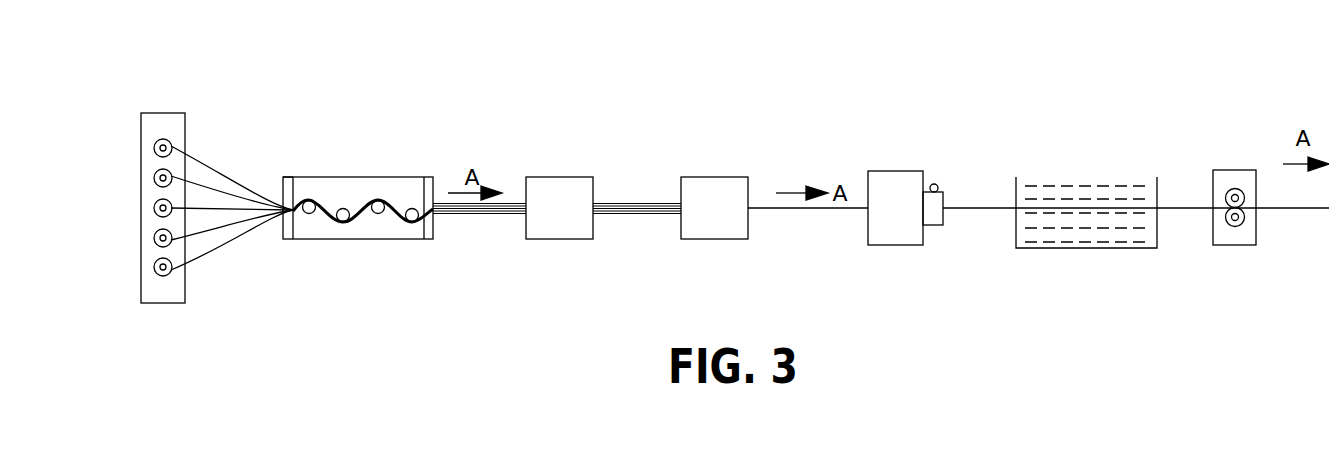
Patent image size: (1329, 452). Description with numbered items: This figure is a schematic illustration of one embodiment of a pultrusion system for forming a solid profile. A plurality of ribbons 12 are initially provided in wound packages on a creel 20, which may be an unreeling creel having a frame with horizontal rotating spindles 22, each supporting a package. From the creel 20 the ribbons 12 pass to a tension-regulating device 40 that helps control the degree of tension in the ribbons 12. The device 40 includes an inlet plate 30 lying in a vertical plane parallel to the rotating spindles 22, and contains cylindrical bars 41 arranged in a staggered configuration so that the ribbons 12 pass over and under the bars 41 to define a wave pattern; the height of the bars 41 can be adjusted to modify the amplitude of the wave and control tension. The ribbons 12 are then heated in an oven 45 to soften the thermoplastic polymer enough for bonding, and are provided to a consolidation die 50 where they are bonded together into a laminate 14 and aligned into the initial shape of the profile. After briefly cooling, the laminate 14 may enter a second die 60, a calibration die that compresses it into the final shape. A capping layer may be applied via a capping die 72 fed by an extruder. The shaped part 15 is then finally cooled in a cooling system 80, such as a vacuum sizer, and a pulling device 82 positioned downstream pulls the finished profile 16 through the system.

The ribbons 12 is at (215, 163).
The laminate 14 is at (802, 208).
The shaped part 15 is at (978, 208).
The finished profile 16 is at (1185, 208).
The creel 20 is at (160, 120).
The rotating spindles 22 is at (157, 237).
The inlet plate 30 is at (288, 243).
The tension-regulating device 40 is at (357, 176).
The cylindrical bars 41 is at (378, 212).
The oven 45 is at (555, 195).
The consolidation die 50 is at (717, 195).
The second die 60 is at (895, 195).
The capping die 72 is at (930, 217).
The cooling system 80 is at (1115, 248).
The pulling device 82 is at (1233, 245).